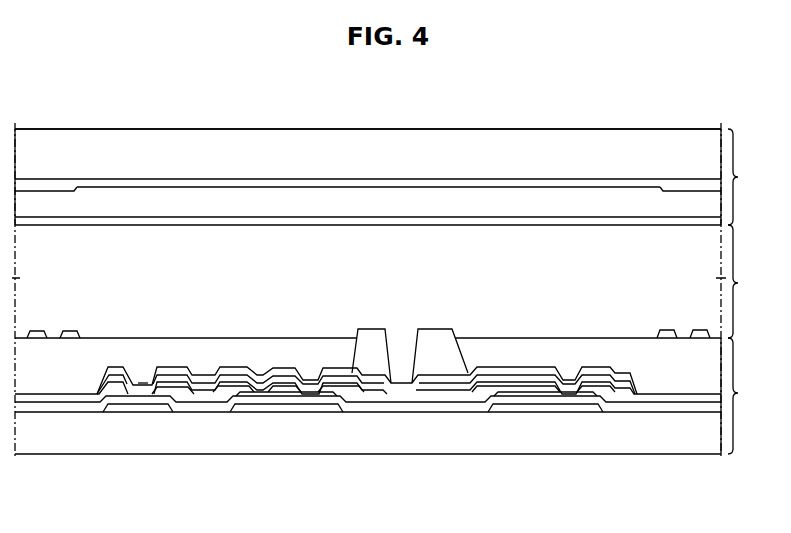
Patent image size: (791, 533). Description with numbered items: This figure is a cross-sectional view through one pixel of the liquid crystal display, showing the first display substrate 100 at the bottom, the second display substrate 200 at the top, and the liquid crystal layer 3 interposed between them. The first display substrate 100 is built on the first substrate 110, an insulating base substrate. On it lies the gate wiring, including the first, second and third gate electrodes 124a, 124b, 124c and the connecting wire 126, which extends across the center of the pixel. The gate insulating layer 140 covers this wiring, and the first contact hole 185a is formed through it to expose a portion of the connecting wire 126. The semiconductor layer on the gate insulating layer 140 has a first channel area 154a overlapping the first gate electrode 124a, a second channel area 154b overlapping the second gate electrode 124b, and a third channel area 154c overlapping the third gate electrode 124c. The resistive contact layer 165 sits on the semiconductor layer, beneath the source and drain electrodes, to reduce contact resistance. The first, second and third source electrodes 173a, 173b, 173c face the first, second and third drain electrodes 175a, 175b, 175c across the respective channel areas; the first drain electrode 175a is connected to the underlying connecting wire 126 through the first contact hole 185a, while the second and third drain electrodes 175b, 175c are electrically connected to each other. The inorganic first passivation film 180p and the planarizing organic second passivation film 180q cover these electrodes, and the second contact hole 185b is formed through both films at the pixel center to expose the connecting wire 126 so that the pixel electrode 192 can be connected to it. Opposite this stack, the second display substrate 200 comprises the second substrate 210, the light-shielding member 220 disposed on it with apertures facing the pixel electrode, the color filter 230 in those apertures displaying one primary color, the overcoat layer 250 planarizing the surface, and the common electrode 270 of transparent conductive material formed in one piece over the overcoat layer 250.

The liquid crystal layer 3 is at (742, 281).
The first display substrate 100 is at (394, 396).
The first substrate 110 is at (482, 445).
The first gate electrode 124a is at (240, 408).
The second gate electrode 124b is at (333, 408).
The third gate electrode 124c is at (525, 408).
The connecting wire 126 is at (133, 408).
The gate insulating layer 140 is at (83, 410).
The first channel area 154a is at (263, 391).
The second channel area 154b is at (312, 393).
The third channel area 154c is at (568, 391).
The resistive contact layer 165 is at (195, 395).
The first source electrode 173a is at (280, 382).
The second source electrode 173b is at (298, 383).
The third source electrode 173c is at (597, 378).
The first drain electrode 175a is at (238, 380).
The second drain electrode 175b is at (335, 380).
The third drain electrode 175c is at (518, 380).
The first passivation film 180p is at (43, 400).
The second passivation film 180q is at (552, 376).
The first contact hole 185a is at (143, 383).
The second contact hole 185b is at (401, 349).
The pixel electrode 192 is at (176, 340).
The second display substrate 200 is at (394, 177).
The second substrate 210 is at (370, 145).
The light-shielding member 220 is at (419, 183).
The color filter 230 is at (44, 185).
The overcoat layer 250 is at (478, 200).
The common electrode 270 is at (537, 220).